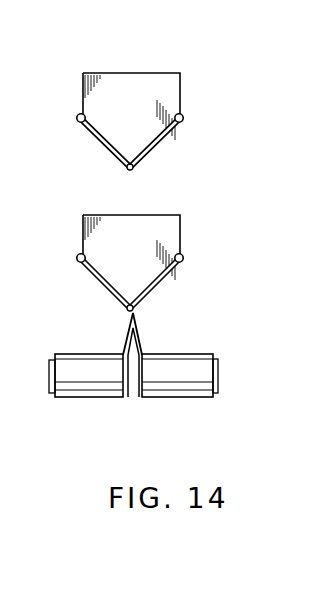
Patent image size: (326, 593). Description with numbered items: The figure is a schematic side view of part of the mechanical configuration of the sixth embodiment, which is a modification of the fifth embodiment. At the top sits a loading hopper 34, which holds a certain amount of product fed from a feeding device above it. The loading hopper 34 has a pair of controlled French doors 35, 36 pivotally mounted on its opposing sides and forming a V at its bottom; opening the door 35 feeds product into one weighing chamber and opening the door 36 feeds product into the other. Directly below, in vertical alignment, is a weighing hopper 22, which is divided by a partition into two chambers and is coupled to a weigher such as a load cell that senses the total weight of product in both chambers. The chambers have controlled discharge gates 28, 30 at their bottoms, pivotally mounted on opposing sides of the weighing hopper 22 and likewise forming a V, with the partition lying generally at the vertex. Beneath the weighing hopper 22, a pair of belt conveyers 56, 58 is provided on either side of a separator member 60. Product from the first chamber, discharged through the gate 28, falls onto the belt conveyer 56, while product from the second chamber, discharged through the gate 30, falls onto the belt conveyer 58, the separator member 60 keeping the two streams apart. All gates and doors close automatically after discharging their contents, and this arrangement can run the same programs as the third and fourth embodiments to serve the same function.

The weighing hopper 22 is at (128, 214).
The discharge gate 28 is at (100, 284).
The discharge gate 30 is at (163, 284).
The loading hopper 34 is at (126, 73).
The French door 35 is at (101, 144).
The French door 36 is at (164, 145).
The belt conveyer 56 is at (93, 400).
The belt conveyer 58 is at (183, 400).
The separator member 60 is at (144, 333).